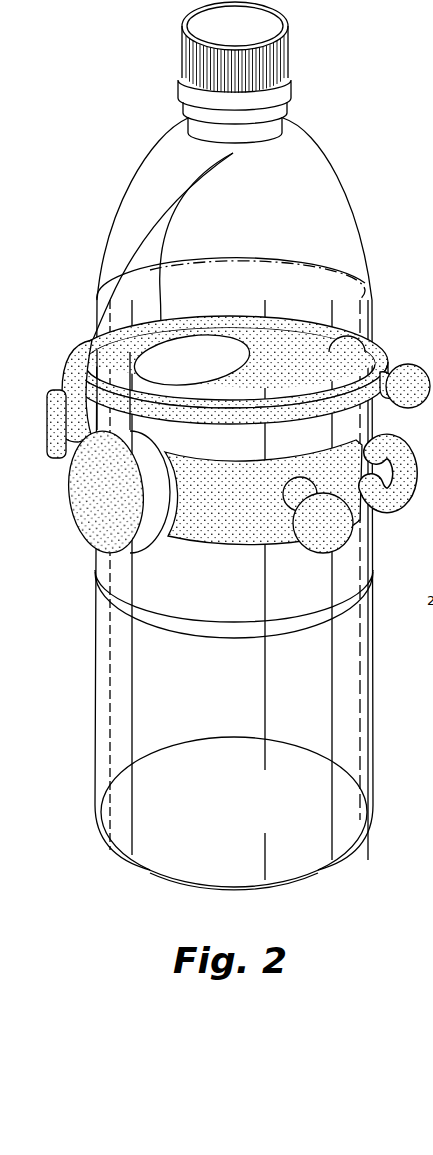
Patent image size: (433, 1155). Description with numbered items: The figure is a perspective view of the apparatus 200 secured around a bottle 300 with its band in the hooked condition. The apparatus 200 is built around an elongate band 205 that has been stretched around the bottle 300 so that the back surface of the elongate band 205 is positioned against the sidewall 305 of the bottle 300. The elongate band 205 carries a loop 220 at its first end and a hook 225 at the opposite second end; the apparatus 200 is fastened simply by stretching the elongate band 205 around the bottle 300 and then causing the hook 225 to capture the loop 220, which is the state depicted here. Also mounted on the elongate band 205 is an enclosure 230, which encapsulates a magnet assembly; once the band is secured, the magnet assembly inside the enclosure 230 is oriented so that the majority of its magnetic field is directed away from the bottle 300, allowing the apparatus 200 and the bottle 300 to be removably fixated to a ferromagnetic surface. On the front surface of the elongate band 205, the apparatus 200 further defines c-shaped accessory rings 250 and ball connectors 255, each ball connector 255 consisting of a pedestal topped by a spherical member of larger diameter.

The apparatus 200 is at (77, 318).
The elongate band 205 is at (225, 455).
The loop 220 is at (90, 345).
The hook 225 is at (52, 436).
The enclosure 230 is at (88, 503).
The accessory ring 250 is at (396, 446).
The ball connector 255 is at (408, 364).
The bottle 300 is at (229, 446).
The sidewall 305 is at (233, 581).